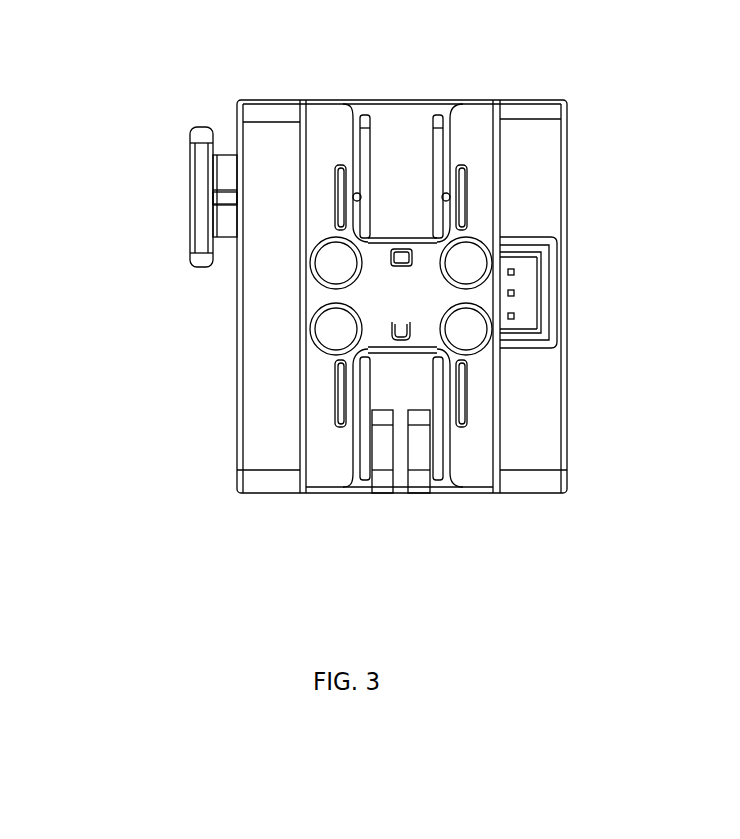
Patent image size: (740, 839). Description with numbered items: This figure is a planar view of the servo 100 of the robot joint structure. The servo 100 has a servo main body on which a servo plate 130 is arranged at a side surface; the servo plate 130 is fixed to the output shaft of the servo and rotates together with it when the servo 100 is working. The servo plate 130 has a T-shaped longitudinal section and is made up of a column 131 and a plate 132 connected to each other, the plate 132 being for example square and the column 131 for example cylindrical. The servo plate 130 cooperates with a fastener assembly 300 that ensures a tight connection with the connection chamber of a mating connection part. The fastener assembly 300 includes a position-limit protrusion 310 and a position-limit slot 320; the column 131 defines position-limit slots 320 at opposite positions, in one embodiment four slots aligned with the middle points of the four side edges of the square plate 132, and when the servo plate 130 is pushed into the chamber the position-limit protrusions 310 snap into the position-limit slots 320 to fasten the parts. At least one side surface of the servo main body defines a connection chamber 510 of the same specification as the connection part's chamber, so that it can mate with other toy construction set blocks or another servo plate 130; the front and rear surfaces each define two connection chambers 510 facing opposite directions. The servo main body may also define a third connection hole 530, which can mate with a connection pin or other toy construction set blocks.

The servo 100 is at (233, 96).
The servo plate 130 is at (132, 179).
The column 131 is at (228, 172).
The plate 132 is at (203, 192).
The fastener assembly 300 is at (235, 262).
The position-limit protrusion 310 is at (360, 197).
The position-limit slot 320 is at (222, 203).
The connection chamber 510 is at (470, 135).
The third connection hole 530 is at (467, 333).